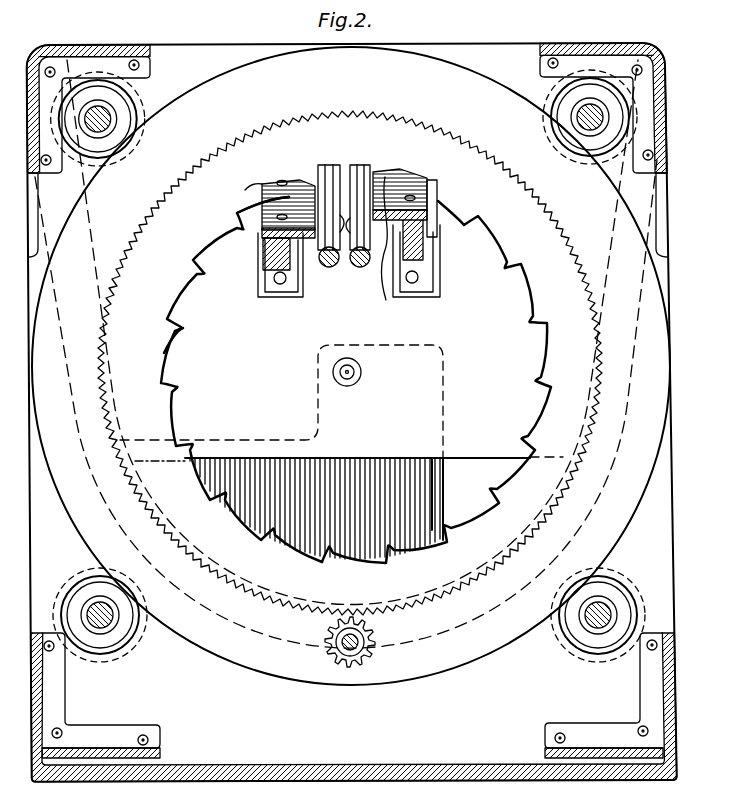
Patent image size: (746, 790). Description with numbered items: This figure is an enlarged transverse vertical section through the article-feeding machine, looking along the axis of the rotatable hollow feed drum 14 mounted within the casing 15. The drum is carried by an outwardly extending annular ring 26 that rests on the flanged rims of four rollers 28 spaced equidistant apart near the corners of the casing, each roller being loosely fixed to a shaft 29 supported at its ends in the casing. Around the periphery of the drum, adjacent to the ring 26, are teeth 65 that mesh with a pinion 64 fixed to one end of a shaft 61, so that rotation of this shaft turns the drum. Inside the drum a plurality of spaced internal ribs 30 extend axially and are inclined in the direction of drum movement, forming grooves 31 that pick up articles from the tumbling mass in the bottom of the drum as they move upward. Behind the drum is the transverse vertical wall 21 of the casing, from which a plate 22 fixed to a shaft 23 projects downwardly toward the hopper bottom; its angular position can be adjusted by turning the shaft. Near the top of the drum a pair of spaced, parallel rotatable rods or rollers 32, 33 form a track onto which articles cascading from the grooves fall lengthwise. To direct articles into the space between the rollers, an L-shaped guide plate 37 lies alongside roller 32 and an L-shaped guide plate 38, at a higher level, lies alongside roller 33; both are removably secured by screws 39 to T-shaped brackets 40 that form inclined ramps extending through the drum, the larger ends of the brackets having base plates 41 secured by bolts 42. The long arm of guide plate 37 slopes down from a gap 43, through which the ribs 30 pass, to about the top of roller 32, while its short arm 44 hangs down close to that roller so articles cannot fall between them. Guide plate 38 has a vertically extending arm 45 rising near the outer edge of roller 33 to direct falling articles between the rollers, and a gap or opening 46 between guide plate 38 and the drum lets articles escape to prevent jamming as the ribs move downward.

The feed drum 14 is at (480, 660).
The casing 15 is at (668, 198).
The transverse vertical wall 21 is at (534, 398).
The plate 22 is at (430, 478).
The shaft 23 is at (352, 376).
The annular shoulder or ring 26 is at (248, 668).
The rollers 28 is at (135, 105).
The shafts 29 is at (101, 122).
The internal ribs 30 is at (246, 196).
The grooves 31 is at (160, 352).
The rod or roller 32 is at (331, 268).
The rod or roller 33 is at (361, 270).
The guide plate 37 is at (264, 212).
The guide plate 38 is at (390, 190).
The screws 39 is at (284, 183).
The brackets 40 is at (268, 258).
The base plates 41 is at (262, 292).
The bolts 42 is at (279, 284).
The gap 43 is at (248, 216).
The short arm 44 is at (315, 258).
The vertically extending arm 45 is at (387, 282).
The gap or opening 46 is at (438, 196).
The shaft 61 is at (358, 653).
The pinion 64 is at (344, 668).
The teeth 65 is at (298, 612).